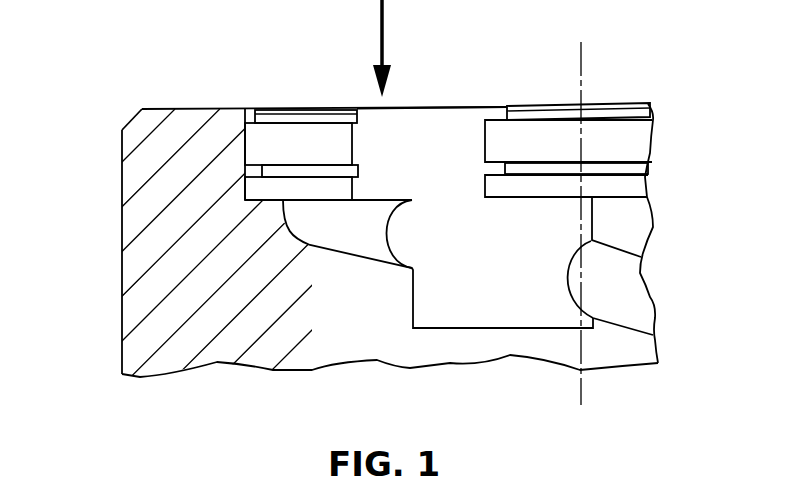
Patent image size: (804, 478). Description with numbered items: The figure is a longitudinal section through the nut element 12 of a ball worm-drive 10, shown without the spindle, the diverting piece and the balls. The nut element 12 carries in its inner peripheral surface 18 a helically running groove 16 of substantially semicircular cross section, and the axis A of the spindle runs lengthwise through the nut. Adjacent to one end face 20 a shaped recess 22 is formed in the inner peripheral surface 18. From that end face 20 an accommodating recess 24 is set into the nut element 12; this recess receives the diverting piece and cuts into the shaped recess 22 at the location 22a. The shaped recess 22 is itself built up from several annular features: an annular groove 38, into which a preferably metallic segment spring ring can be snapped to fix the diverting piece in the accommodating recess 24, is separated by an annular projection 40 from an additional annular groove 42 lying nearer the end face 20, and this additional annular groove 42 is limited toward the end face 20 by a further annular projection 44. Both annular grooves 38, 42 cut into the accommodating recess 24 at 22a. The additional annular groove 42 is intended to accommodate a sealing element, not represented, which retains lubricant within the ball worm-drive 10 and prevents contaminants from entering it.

The ball worm-drive 10 is at (648, 86).
The nut element 12 is at (130, 177).
The groove 16 is at (638, 297).
The inner peripheral surface 18 is at (358, 345).
The end face 20 is at (163, 108).
The shaped recess 22 is at (280, 130).
The cut-in location 22a is at (602, 116).
The accommodating recess 24 is at (388, 142).
The annular groove 38 is at (633, 182).
The annular projection 40 is at (633, 167).
The additional annular groove 42 is at (640, 138).
The annular projection 44 is at (648, 117).
The axis A is at (580, 56).